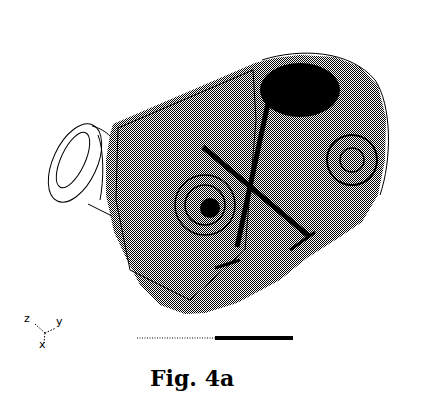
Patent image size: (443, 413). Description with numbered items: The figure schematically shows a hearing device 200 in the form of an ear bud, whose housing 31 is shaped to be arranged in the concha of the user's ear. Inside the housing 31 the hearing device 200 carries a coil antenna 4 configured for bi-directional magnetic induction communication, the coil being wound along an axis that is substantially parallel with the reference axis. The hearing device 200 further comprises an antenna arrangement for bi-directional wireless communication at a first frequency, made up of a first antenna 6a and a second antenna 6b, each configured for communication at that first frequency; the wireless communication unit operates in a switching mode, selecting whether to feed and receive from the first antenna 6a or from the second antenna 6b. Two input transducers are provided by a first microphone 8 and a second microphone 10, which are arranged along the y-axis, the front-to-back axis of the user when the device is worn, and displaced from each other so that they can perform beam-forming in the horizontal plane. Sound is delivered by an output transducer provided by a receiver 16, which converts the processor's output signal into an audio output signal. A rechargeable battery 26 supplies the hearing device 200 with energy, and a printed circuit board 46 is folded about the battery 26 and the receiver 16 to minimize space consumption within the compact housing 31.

The hearing device 200 is at (185, 56).
The coil antenna 4 is at (302, 72).
The printed circuit board 46 is at (176, 106).
The housing 31 is at (362, 100).
The first microphone 8 is at (350, 163).
The rechargeable battery 26 is at (277, 195).
The receiver 16 is at (148, 200).
The second microphone 10 is at (203, 212).
The first antenna 6a is at (303, 237).
The second antenna 6b is at (227, 263).